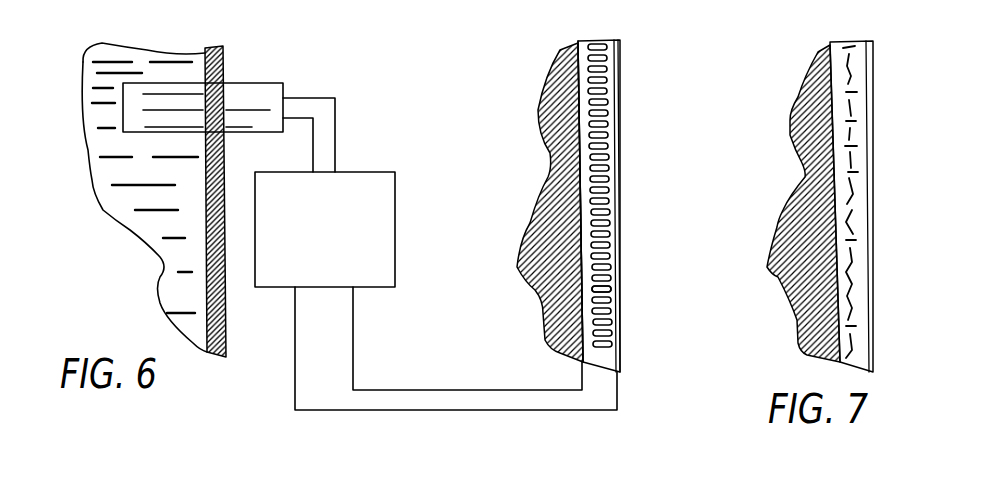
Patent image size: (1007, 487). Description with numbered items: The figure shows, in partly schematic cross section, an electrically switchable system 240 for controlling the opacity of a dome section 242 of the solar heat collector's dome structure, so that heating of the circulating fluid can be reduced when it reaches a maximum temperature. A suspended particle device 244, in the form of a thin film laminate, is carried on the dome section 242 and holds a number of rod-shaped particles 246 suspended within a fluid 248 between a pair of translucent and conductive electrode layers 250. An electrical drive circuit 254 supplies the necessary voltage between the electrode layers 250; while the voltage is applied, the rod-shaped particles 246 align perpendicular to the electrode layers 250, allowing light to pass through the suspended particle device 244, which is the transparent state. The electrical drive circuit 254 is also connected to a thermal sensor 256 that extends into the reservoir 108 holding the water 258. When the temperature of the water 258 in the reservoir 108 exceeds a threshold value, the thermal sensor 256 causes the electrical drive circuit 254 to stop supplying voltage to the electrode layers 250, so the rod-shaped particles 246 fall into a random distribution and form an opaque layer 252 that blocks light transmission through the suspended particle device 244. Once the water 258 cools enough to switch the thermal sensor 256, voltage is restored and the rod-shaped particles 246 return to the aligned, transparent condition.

In FIG. 6, the reservoir 108 is at (228, 326).
In FIG. 6, the thermal sensor 256 is at (247, 82).
In FIG. 6, the electrical drive circuit 254 is at (348, 167).
In FIG. 6, the water 258 is at (130, 198).
In FIG. 6, the electrically switchable system 240 is at (522, 98).
In FIG. 6, the dome section 242 is at (538, 293).
In FIG. 6, the suspended particle device 244 is at (622, 105).
In FIG. 6, the rod-shaped particles 246 is at (607, 182).
In FIG. 6, the fluid 248 is at (602, 287).
In FIG. 6, the electrode layers 250 is at (577, 224).
In FIG. 7, the opaque layer 252 is at (853, 143).